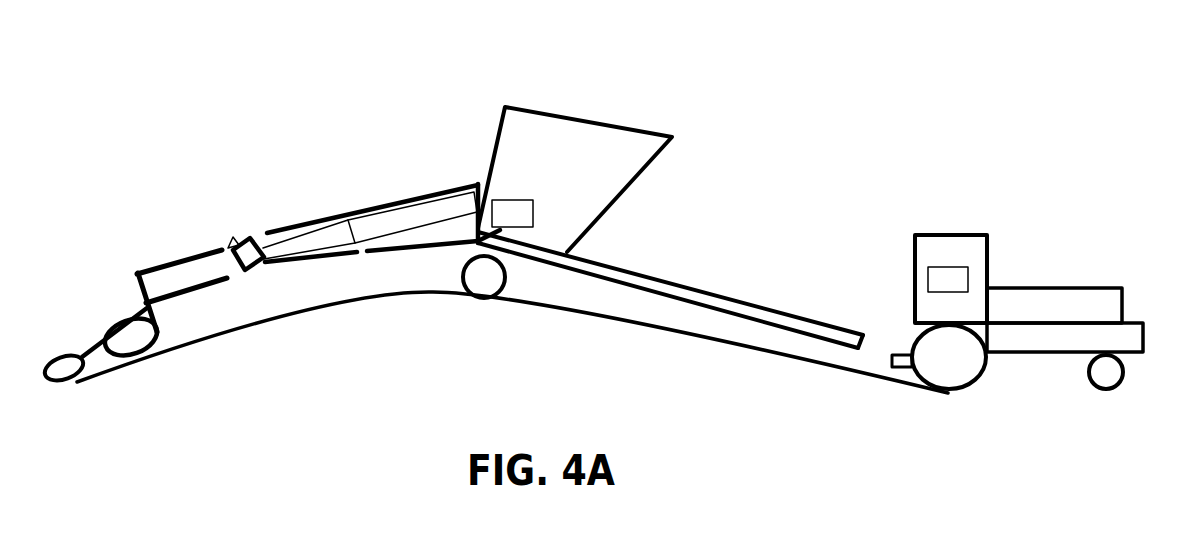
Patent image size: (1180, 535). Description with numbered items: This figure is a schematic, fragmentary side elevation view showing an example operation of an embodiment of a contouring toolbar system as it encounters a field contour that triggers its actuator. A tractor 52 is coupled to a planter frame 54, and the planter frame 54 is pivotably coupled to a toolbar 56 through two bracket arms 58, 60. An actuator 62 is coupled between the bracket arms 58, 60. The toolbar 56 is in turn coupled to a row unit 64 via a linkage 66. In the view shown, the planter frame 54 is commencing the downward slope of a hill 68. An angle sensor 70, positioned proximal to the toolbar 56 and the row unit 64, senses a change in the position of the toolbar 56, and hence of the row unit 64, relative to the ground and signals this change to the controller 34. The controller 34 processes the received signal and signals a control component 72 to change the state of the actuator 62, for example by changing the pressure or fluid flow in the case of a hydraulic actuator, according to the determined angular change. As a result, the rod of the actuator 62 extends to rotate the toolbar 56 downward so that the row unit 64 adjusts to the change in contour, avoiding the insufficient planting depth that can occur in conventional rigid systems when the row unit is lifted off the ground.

The controller 34 is at (938, 272).
The tractor 52 is at (1065, 292).
The planter frame 54 is at (737, 313).
The toolbar 56 is at (247, 237).
The bracket arm 58 is at (427, 250).
The bracket arm 60 is at (340, 257).
The actuator 62 is at (378, 223).
The row unit 64 is at (123, 318).
The linkage 66 is at (183, 260).
The hill 68 is at (545, 352).
The angle sensor 70 is at (232, 239).
The control component 72 is at (517, 207).